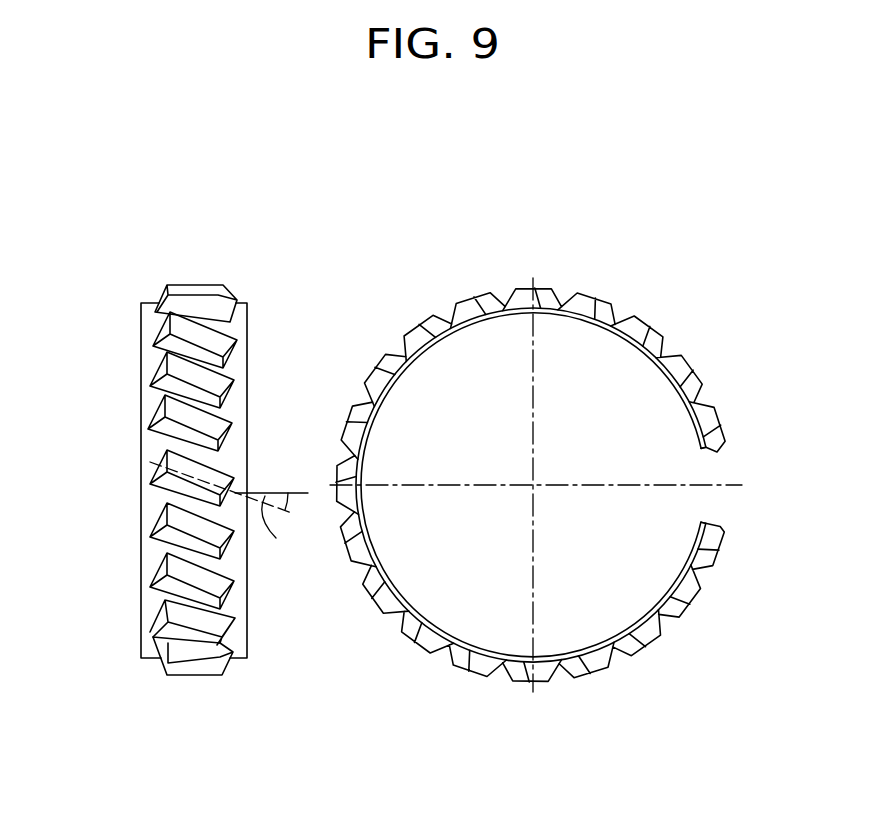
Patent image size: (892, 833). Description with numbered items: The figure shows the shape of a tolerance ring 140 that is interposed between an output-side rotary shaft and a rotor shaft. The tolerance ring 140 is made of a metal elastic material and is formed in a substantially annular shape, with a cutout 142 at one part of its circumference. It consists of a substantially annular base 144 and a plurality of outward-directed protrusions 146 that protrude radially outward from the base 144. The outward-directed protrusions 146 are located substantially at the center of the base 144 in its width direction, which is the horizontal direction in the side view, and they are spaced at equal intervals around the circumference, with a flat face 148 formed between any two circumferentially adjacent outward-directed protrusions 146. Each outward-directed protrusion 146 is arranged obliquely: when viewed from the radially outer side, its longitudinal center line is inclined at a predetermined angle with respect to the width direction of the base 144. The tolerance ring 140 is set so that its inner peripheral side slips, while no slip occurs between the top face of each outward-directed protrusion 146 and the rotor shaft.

The tolerance ring 140 is at (352, 232).
The cutout 142 is at (710, 462).
The base 144 is at (618, 342).
The outward-directed protrusion 146 is at (582, 302).
The flat face 148 is at (198, 453).